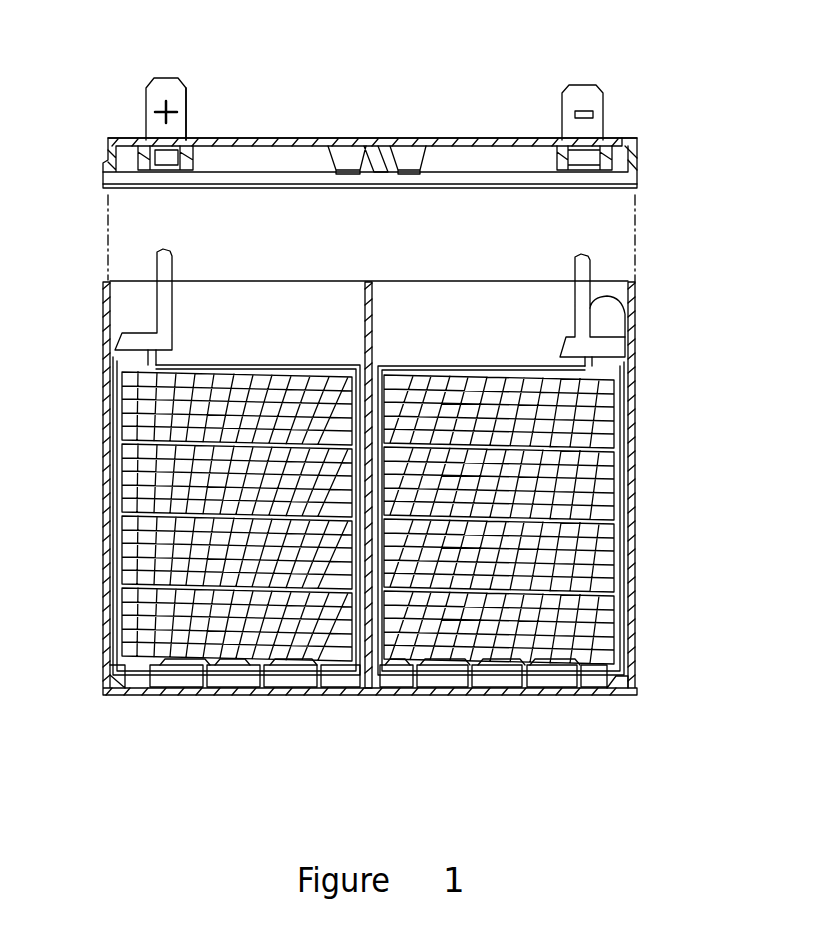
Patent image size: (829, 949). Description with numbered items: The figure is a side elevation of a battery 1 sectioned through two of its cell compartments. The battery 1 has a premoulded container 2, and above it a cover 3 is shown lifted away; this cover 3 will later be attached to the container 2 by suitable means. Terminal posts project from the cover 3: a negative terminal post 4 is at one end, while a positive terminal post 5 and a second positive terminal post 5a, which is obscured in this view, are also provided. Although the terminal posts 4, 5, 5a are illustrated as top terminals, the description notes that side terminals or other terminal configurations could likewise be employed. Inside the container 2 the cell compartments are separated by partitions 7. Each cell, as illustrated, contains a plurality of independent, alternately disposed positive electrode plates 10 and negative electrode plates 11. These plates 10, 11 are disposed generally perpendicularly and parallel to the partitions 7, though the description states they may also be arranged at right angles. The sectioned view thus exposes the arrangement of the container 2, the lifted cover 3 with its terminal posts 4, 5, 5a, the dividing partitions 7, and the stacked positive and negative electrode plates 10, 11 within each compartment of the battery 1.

The battery 1 is at (636, 688).
The premoulded container 2 is at (636, 440).
The cover 3 is at (641, 174).
The negative terminal post 4 is at (605, 92).
The positive terminal post 5 is at (160, 78).
The positive terminal post 5a is at (195, 97).
The partitions 7 is at (320, 280).
The positive electrode plates 10 is at (142, 357).
The negative electrode plates 11 is at (595, 369).